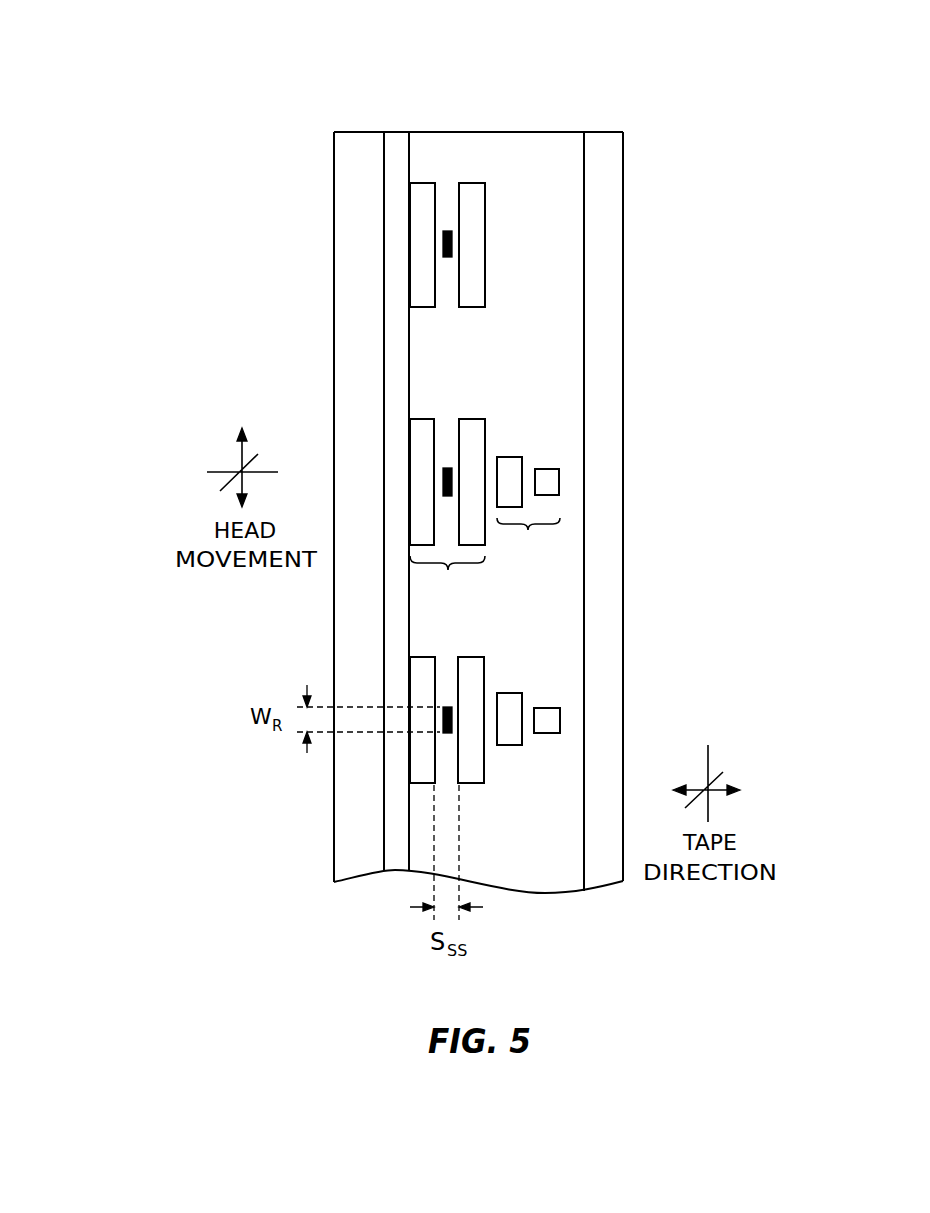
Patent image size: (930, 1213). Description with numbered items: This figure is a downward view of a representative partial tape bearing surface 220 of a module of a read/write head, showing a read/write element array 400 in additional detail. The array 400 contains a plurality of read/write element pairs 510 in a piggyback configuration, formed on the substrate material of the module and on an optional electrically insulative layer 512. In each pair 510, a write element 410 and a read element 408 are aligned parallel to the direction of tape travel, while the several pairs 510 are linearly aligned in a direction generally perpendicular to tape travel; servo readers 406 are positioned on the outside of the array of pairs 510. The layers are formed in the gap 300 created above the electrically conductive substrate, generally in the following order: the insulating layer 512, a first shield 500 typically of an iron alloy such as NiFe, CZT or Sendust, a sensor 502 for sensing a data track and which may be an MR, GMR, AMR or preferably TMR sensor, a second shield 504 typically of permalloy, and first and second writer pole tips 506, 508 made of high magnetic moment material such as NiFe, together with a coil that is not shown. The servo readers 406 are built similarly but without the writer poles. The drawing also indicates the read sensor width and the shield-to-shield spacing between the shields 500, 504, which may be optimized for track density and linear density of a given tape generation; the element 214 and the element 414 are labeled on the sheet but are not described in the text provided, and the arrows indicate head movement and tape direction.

The read/write element array 400 is at (473, 100).
The gap 300 is at (548, 132).
The tape bearing surface 220 is at (334, 166).
The outrigger 214 is at (623, 160).
The electrically insulative layer 512 is at (384, 223).
The servo readers 406 is at (512, 238).
The first shield 500 is at (420, 418).
The sensor 502 is at (448, 467).
The second shield 504 is at (478, 418).
The first writer pole tip 506 is at (510, 457).
The second writer pole tip 508 is at (547, 469).
The write element 410 is at (528, 530).
The read element 408 is at (449, 571).
The transducer array 414 is at (485, 720).
The read/write element pair 510 is at (648, 483).